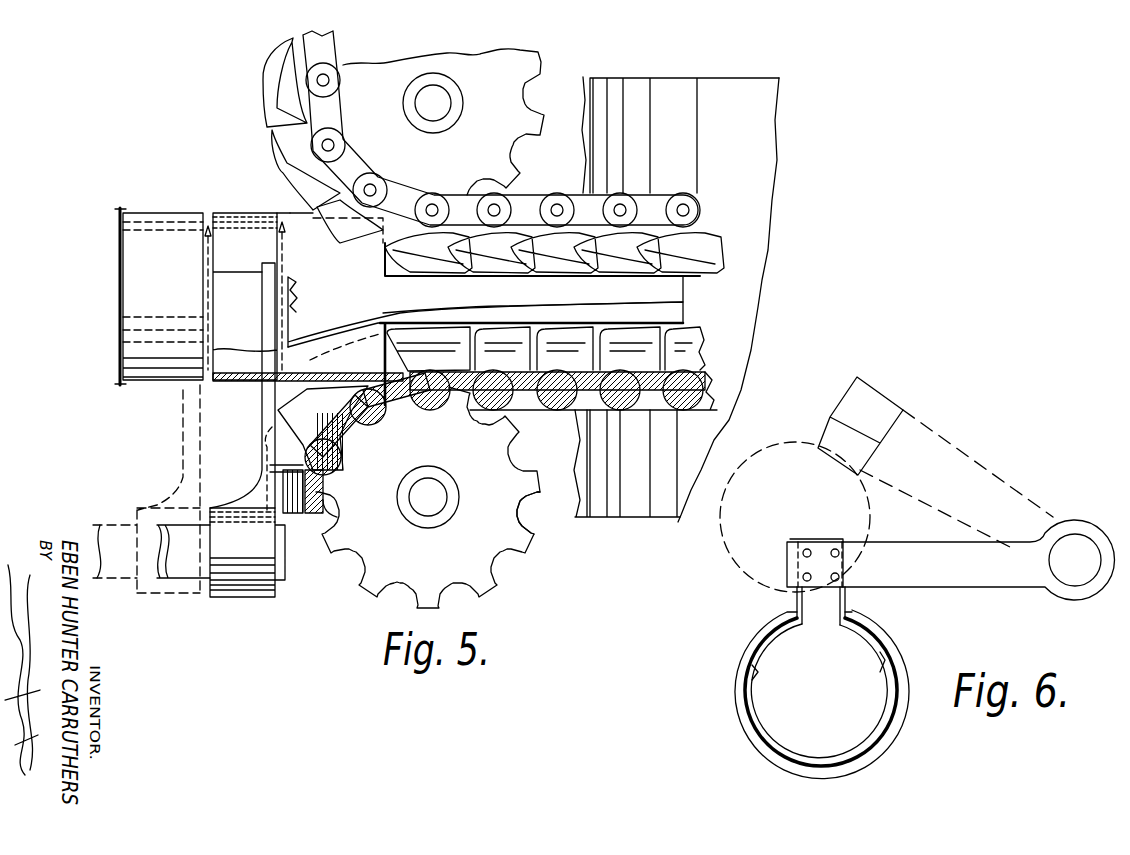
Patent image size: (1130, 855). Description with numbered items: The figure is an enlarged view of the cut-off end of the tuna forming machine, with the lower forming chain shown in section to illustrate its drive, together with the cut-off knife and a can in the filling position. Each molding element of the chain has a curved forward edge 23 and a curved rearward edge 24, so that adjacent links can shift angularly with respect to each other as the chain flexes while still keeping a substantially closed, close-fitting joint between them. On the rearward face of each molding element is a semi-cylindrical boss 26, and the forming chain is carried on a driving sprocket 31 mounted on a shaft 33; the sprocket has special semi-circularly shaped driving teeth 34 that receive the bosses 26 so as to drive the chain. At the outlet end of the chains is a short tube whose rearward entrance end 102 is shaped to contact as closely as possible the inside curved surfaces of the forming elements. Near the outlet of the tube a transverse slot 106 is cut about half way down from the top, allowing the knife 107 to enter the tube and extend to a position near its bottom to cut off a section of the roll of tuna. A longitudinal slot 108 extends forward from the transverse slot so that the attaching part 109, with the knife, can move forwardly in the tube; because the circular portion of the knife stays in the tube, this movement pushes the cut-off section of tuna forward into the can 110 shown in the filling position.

In FIG. 5, the curved forward edge 23 is at (667, 248).
In FIG. 5, the curved rearward edge 24 is at (648, 263).
In FIG. 5, the boss 26 is at (500, 393).
In FIG. 5, the driving sprocket 31 is at (480, 558).
In FIG. 5, the shaft 33 is at (425, 505).
In FIG. 5, the driving teeth 34 is at (523, 510).
In FIG. 5, the entrance end of the tube 102 is at (408, 352).
In FIG. 5, the transverse slot 106 is at (283, 224).
In FIG. 6, the knife 107 is at (858, 660).
In FIG. 5, the longitudinal slot 108 is at (232, 283).
In FIG. 6, the attaching part 109 is at (817, 599).
In FIG. 5, the can 110 is at (138, 303).